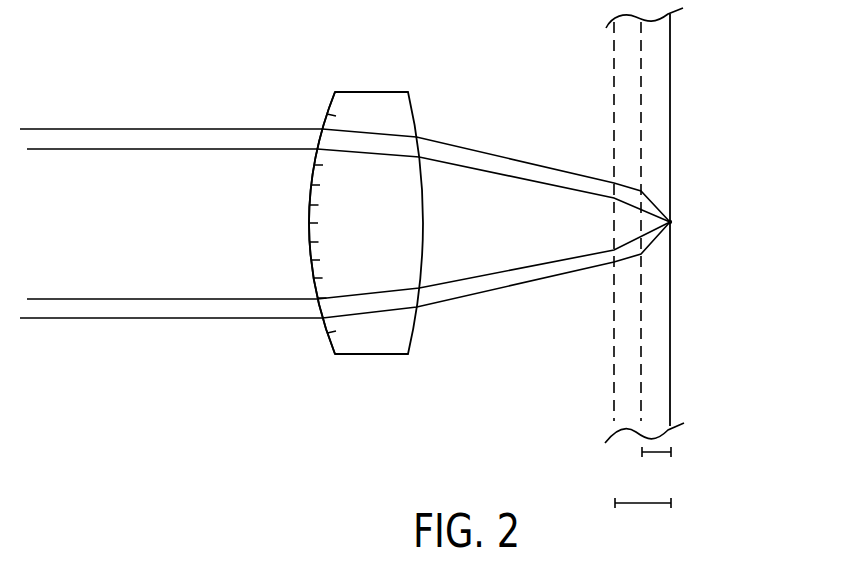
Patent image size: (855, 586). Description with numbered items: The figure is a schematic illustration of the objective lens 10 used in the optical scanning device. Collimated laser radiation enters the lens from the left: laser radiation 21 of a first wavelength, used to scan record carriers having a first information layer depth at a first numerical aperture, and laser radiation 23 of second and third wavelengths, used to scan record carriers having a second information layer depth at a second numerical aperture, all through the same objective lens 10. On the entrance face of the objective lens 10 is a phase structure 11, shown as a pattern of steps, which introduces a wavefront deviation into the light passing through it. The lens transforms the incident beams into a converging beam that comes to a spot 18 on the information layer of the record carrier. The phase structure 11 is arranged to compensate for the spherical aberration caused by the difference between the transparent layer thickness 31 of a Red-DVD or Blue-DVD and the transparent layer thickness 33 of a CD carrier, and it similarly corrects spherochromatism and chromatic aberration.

The objective lens 10 is at (375, 91).
The phase structure 11 is at (333, 93).
The spot 18 is at (672, 222).
The laser radiation of a first wavelength 21 is at (107, 127).
The laser radiation of second and third wavelengths 23 is at (220, 152).
The thickness of transparent layer 31 is at (642, 453).
The thickness of transparent layer 33 is at (643, 509).